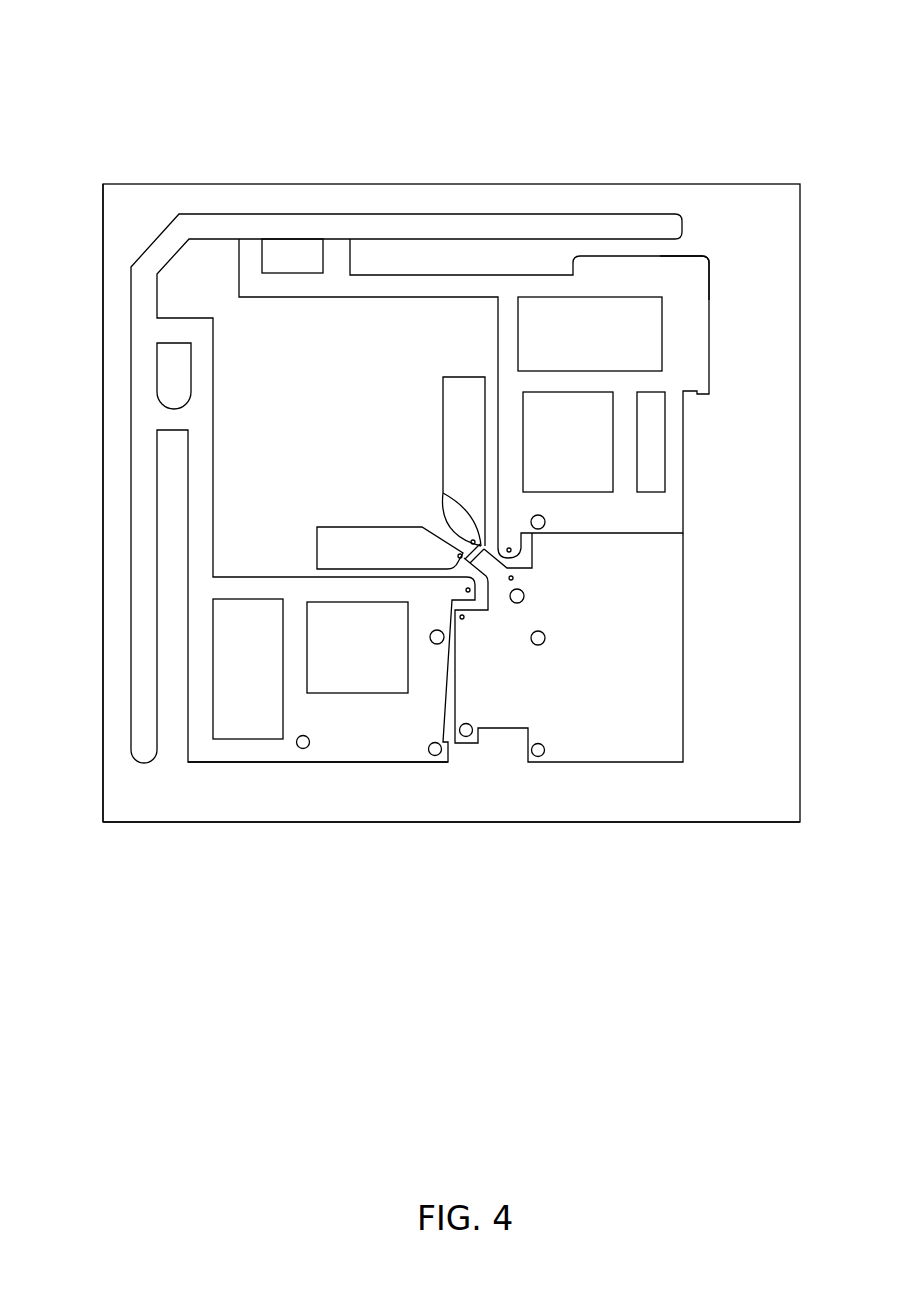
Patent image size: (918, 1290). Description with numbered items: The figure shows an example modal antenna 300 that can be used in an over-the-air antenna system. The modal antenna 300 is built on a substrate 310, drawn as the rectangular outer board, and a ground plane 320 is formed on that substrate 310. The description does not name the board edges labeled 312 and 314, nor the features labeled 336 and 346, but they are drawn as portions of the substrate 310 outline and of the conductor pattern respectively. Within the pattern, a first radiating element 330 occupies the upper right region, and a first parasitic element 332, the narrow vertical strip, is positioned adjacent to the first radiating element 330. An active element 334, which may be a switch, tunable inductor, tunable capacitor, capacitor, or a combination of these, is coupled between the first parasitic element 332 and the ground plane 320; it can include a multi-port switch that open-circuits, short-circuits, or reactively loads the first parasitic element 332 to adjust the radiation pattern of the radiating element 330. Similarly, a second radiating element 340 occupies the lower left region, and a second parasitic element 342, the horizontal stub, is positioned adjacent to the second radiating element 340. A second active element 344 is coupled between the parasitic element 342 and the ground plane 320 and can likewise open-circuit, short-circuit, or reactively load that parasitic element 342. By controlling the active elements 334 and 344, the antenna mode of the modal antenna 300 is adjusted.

The modal antenna 300 is at (697, 97).
The substrate 310 is at (170, 186).
The substrate side edge 312 is at (102, 340).
The substrate bottom edge 314 is at (757, 824).
The ground plane 320 is at (684, 672).
The first radiating element 330 is at (686, 440).
The first parasitic element 332 is at (443, 428).
The active element 334 is at (452, 512).
The ground plane corner 336 is at (697, 256).
The second radiating element 340 is at (247, 766).
The second parasitic element 342 is at (355, 527).
The active element 344 is at (488, 576).
The ground plane edge 346 is at (363, 762).